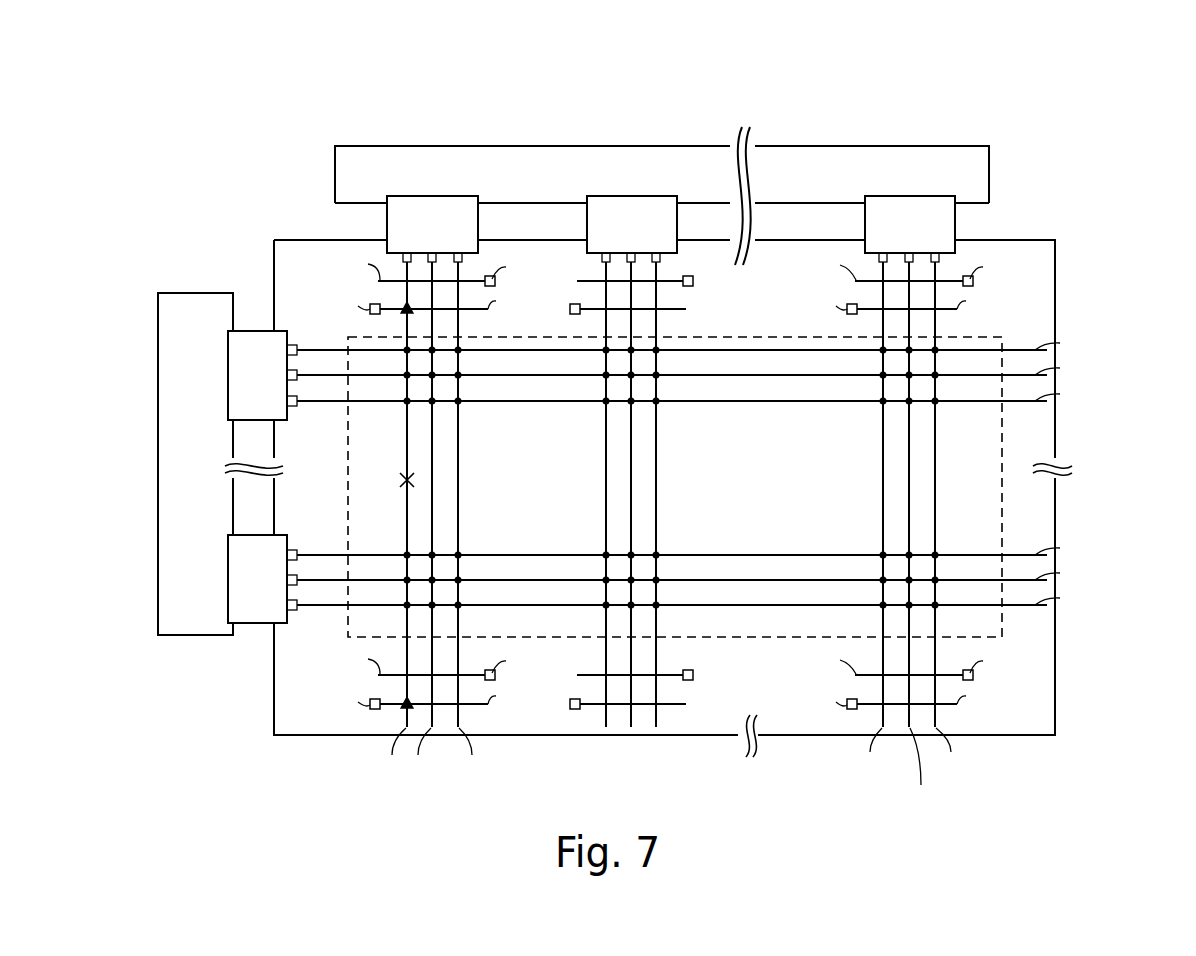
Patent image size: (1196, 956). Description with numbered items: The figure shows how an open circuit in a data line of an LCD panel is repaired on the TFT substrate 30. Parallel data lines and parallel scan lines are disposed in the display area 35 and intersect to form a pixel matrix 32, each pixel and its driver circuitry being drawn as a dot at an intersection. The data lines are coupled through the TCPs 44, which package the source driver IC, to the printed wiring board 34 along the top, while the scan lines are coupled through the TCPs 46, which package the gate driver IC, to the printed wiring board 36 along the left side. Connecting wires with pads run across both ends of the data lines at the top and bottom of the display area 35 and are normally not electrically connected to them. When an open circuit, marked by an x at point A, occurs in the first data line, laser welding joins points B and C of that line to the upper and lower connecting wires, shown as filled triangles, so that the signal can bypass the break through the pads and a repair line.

The TFT substrate 30 is at (1028, 103).
The pixel matrix 32 is at (658, 340).
The printed wiring board 34 is at (650, 190).
The display area 35 is at (993, 337).
The printed wiring board 36 is at (210, 479).
The tape carrier package 44 is at (449, 240).
The tape carrier package 46 is at (274, 392).